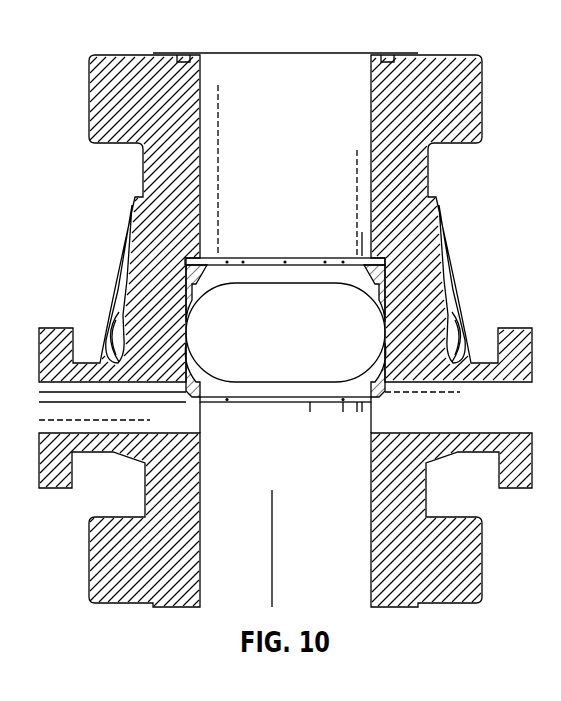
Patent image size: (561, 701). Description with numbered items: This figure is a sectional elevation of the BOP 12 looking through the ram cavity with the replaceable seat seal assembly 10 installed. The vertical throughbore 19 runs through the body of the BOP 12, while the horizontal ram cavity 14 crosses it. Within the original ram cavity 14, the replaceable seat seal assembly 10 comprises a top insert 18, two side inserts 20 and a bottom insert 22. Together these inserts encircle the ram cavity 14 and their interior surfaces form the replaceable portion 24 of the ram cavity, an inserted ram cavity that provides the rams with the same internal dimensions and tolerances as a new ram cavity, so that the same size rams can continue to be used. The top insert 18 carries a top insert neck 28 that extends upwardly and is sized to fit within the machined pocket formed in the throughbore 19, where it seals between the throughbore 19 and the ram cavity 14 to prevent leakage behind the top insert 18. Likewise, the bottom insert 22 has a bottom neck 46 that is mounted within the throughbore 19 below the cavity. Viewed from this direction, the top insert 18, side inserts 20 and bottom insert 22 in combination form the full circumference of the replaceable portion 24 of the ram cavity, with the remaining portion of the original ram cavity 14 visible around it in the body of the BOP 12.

The replaceable seat seal assembly 10 is at (300, 180).
The BOP 12 is at (441, 78).
The ram cavity 14 is at (252, 320).
The top insert 18 is at (236, 256).
The throughbore 19 is at (294, 78).
The side inserts 20 is at (173, 325).
The bottom insert 22 is at (246, 440).
The replaceable portion of ram cavity 24 is at (315, 287).
The top insert neck 28 is at (296, 268).
The bottom neck 46 is at (306, 407).